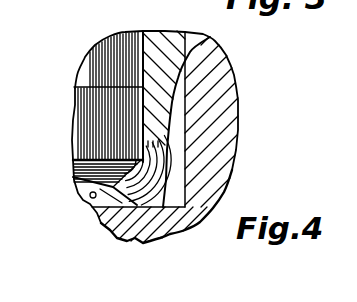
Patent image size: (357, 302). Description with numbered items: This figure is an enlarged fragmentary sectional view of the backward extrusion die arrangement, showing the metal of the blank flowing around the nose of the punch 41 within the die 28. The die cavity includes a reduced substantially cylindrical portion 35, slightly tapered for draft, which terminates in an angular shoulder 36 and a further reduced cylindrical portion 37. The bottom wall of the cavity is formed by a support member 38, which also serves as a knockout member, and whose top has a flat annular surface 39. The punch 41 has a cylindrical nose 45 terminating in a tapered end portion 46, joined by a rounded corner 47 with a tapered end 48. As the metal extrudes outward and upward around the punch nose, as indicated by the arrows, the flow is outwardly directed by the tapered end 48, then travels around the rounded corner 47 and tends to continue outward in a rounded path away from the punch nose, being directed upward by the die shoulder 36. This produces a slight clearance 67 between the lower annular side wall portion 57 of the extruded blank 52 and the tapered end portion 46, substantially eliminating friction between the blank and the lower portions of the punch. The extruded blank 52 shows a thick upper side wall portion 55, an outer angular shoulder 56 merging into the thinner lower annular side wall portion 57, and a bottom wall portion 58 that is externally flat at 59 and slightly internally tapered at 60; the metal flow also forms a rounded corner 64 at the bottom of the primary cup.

The die 28 is at (209, 69).
The reduced substantially cylindrical portion 35 is at (186, 121).
The angular shoulder 36 is at (180, 172).
The further reduced cylindrical portion 37 is at (187, 220).
The support member 38 is at (127, 240).
The flat annular surface 39 is at (157, 237).
The punch 41 is at (123, 40).
The cylindrical nose 45 is at (95, 70).
The tapered end portion 46 is at (105, 121).
The rounded corner 47 is at (92, 163).
The tapered end 48 is at (87, 176).
The extruded blank 52 is at (203, 34).
The thick upper side wall portion 55 is at (168, 50).
The outer angular shoulder 56 is at (183, 82).
The lower annular side wall portion 57 is at (165, 134).
The bottom wall portion 58 is at (114, 229).
The externally flat surface 59 is at (92, 203).
The internally tapered surface 60 is at (82, 194).
The rounded corner 64 is at (165, 205).
The clearance 67 is at (172, 110).